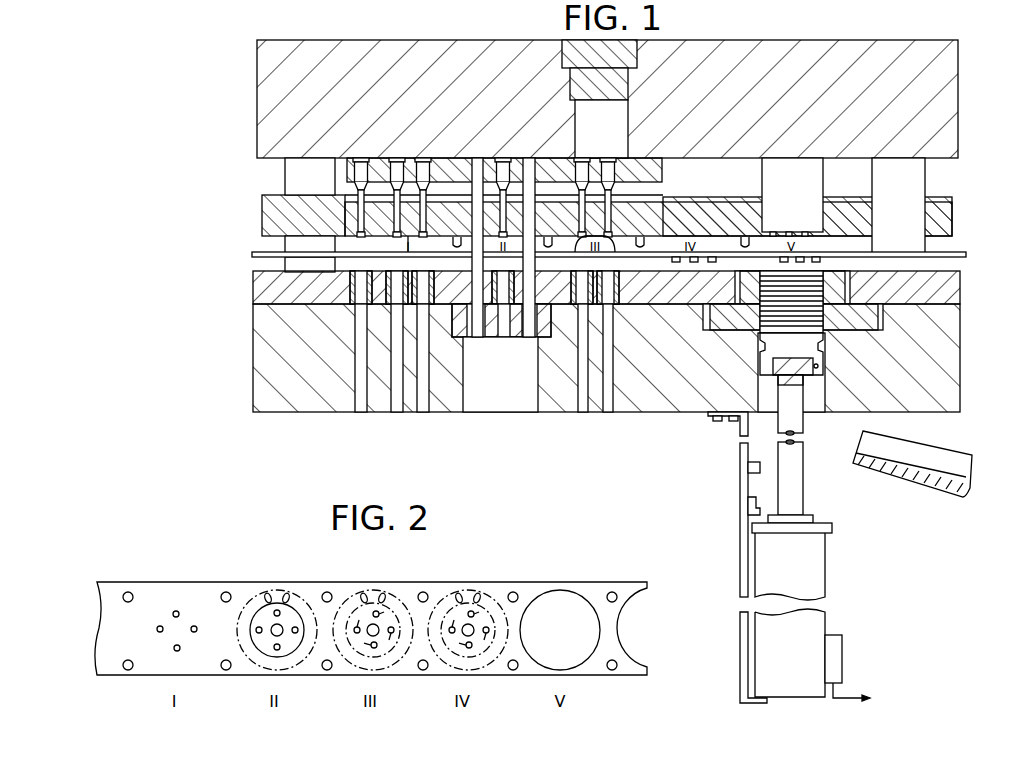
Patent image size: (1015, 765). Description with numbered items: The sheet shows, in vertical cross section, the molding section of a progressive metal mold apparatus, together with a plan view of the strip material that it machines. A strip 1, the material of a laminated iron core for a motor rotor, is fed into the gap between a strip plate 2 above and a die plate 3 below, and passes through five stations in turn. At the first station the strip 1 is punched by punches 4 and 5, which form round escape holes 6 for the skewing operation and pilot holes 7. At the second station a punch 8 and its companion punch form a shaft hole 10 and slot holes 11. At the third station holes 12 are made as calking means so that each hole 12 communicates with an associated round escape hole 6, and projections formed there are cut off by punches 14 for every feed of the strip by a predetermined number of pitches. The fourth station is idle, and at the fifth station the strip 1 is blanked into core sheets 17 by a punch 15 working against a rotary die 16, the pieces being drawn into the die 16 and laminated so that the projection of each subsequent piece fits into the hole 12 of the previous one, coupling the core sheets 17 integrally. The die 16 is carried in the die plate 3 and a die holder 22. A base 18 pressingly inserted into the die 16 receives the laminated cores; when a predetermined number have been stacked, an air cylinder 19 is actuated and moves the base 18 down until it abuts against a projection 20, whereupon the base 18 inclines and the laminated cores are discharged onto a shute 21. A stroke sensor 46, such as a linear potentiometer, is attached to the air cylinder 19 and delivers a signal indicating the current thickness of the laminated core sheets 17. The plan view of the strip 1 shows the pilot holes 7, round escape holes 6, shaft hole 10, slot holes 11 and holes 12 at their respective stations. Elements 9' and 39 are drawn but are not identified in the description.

In FIG. 1, the strip 1 is at (255, 251).
In FIG. 2, the strip 1 is at (98, 604).
In FIG. 1, the strip plate 2 is at (262, 212).
In FIG. 1, the die plate 3 is at (253, 291).
In FIG. 1, the punch 4 is at (398, 157).
In FIG. 1, the punch 5 is at (363, 157).
In FIG. 2, the round escape holes 6 is at (173, 612).
In FIG. 2, the pilot holes 7 is at (128, 592).
In FIG. 1, the punch 8 is at (509, 157).
In FIG. 1, the guide posts 9' is at (506, 247).
In FIG. 2, the shaft hole 10 is at (282, 627).
In FIG. 2, the slot holes 11 is at (267, 592).
In FIG. 2, the holes 12 is at (355, 625).
In FIG. 1, the punches 14 is at (568, 240).
In FIG. 1, the punch 15 is at (781, 198).
In FIG. 1, the rotary die 16 is at (825, 280).
In FIG. 1, the core sheets 17 is at (770, 274).
In FIG. 1, the base 18 is at (760, 354).
In FIG. 1, the air cylinder 19 is at (818, 566).
In FIG. 1, the projection 20 is at (750, 468).
In FIG. 1, the shute 21 is at (963, 474).
In FIG. 1, the die holder 22 is at (955, 378).
In FIG. 1, the upper die shoe 39 is at (956, 90).
In FIG. 1, the stroke sensor 46 is at (842, 665).